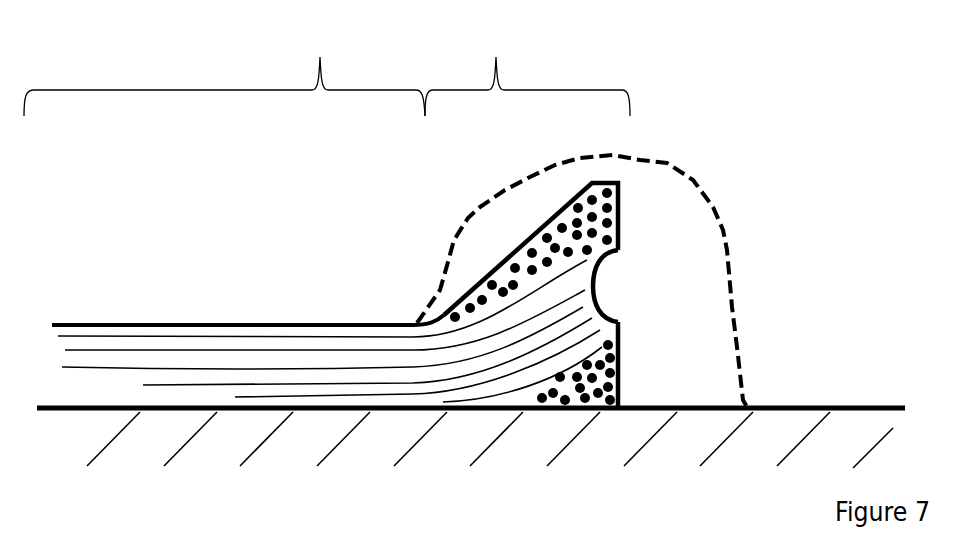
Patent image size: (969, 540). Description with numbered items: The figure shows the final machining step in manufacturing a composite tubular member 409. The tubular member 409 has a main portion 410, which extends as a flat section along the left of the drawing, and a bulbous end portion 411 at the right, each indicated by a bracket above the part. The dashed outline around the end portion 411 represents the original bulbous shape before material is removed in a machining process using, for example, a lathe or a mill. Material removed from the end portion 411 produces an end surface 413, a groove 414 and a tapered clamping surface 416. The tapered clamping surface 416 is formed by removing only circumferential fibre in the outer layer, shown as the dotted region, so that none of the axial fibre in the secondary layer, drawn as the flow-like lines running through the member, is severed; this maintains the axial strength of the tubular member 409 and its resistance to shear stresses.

The tubular member 409 is at (161, 256).
The main portion 410 is at (224, 68).
The end portion 411 is at (582, 213).
The end surface 413 is at (620, 349).
The groove 414 is at (594, 285).
The tapered clamping surface 416 is at (519, 246).